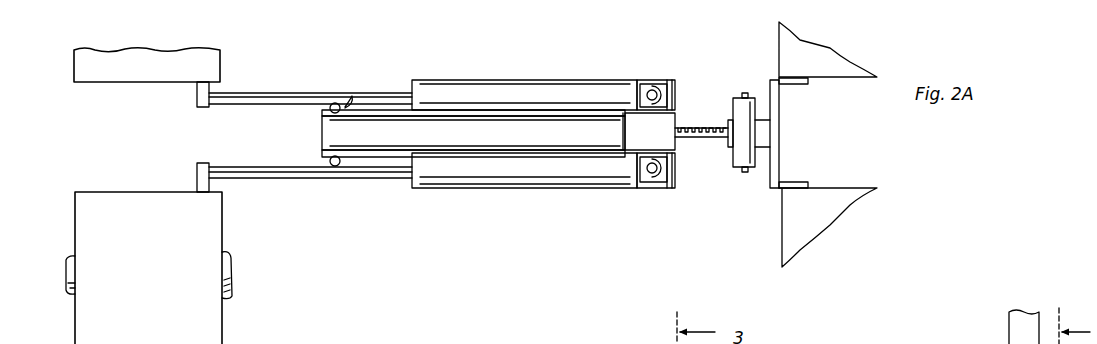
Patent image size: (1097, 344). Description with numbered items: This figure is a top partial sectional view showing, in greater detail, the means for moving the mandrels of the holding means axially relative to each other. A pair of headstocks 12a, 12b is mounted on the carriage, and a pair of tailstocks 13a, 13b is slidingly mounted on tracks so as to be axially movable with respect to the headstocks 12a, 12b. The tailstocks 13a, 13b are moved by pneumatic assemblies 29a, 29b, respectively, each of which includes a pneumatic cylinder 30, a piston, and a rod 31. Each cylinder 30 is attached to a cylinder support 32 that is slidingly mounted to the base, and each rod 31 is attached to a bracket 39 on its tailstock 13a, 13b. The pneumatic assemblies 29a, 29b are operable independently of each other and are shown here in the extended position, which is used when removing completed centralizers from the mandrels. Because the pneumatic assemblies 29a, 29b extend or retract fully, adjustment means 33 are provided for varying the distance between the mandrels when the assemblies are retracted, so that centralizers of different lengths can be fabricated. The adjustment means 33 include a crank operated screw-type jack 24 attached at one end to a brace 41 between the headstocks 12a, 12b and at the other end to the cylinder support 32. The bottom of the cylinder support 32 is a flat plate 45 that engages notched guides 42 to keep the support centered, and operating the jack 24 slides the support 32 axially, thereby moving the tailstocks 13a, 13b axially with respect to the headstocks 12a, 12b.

The headstock 12a is at (837, 232).
The headstock 12b is at (843, 48).
The tailstock 13a is at (226, 330).
The tailstock 13b is at (226, 61).
The crank operated screw-type jack 24 is at (733, 152).
The pneumatic assembly 29a is at (520, 190).
The pneumatic assembly 29b is at (512, 76).
The pneumatic cylinder 30 is at (440, 190).
The rod 31 is at (251, 179).
The cylinder support 32 is at (322, 133).
The adjustment means 33 is at (694, 118).
The bracket 39 is at (200, 164).
The brace 41 is at (780, 155).
The notched guides 42 is at (348, 107).
The flat plate 45 is at (322, 111).